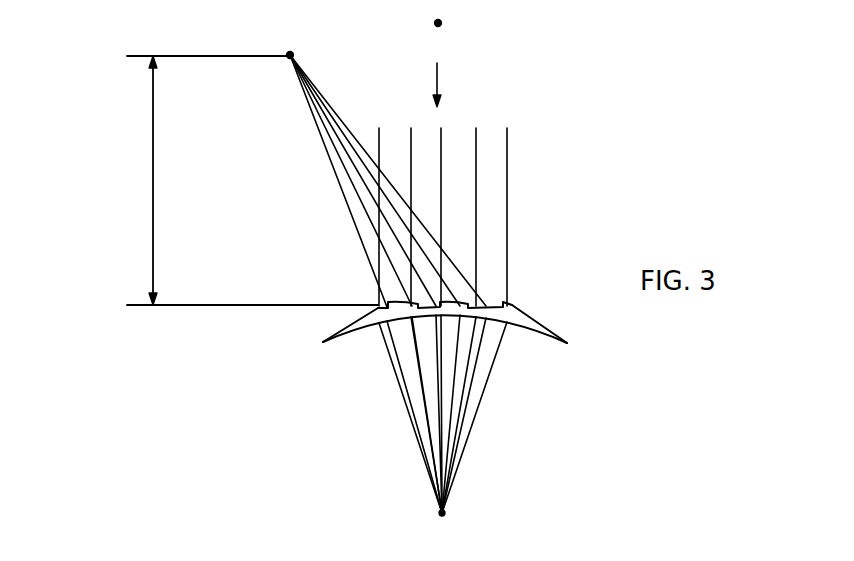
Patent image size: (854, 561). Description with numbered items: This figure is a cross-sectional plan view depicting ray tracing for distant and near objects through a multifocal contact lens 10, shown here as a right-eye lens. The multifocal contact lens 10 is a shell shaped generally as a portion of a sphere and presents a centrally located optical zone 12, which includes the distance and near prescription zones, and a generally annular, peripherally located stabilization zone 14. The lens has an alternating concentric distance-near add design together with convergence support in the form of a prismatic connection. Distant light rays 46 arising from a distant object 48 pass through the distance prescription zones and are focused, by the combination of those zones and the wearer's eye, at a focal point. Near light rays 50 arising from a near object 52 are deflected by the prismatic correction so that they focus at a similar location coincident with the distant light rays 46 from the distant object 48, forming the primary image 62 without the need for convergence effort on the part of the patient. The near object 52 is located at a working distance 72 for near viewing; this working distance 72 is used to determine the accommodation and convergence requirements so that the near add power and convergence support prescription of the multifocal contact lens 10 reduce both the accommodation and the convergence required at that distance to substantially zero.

The multifocal contact lens 10 is at (492, 285).
The optical zone 12 is at (507, 303).
The stabilization zone 14 is at (525, 313).
The distant light rays 46 is at (506, 175).
The distant object 48 is at (441, 24).
The near light rays 50 is at (332, 152).
The near object 52 is at (294, 54).
The primary image 62 is at (444, 513).
The working distance 72 is at (153, 180).